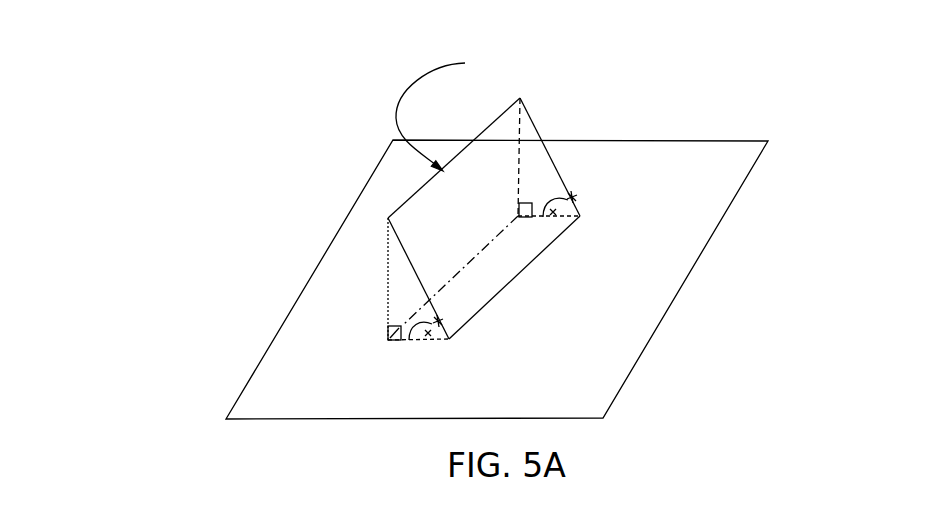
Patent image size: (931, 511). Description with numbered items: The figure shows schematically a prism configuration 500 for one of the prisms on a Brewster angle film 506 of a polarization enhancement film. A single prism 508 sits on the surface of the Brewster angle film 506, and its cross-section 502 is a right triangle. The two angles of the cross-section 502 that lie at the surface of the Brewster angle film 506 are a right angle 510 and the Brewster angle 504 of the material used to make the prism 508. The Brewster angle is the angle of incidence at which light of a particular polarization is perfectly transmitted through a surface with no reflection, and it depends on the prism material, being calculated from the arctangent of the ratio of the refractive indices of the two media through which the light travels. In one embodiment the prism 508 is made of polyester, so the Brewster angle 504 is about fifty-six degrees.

The prism configuration 500 is at (168, 192).
The cross-section 502 is at (393, 282).
The Brewster angle 504 is at (409, 342).
The Brewster angle film 506 is at (642, 350).
The prism 508 is at (458, 111).
The right angle 510 is at (388, 324).